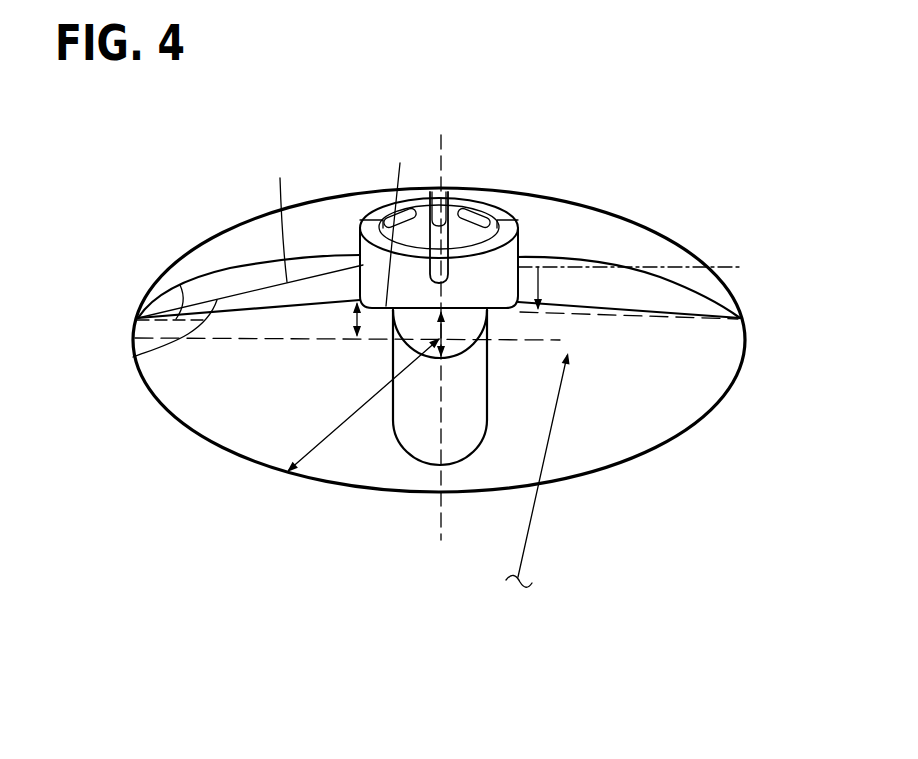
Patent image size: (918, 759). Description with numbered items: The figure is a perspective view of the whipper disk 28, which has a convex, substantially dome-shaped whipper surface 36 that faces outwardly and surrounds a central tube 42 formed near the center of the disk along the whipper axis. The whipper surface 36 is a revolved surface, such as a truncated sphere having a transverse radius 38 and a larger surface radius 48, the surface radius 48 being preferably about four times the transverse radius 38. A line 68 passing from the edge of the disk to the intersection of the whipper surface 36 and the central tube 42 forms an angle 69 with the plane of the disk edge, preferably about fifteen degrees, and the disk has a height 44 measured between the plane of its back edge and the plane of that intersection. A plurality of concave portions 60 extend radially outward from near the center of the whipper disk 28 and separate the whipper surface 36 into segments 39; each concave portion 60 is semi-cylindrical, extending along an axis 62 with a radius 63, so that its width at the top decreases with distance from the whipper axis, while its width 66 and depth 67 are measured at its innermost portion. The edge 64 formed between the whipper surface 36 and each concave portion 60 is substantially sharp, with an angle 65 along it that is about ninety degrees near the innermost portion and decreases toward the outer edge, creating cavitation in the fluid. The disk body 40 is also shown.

The whipper disk 28 is at (600, 184).
The whipper surface 36 is at (643, 240).
The transverse radius 38 is at (327, 452).
The segments 39 is at (253, 238).
The disc body 40 is at (392, 512).
The central tube 42 is at (452, 230).
The height 44 is at (352, 322).
The surface radius 48 is at (535, 522).
The concave portions 60 is at (325, 278).
The axis 62 is at (680, 267).
The radius 63 is at (538, 287).
The edge 64 is at (488, 413).
The angle 65 is at (490, 316).
The width 66 is at (436, 177).
The depth 67 is at (470, 350).
The line 68 is at (124, 357).
The angle 69 is at (174, 289).